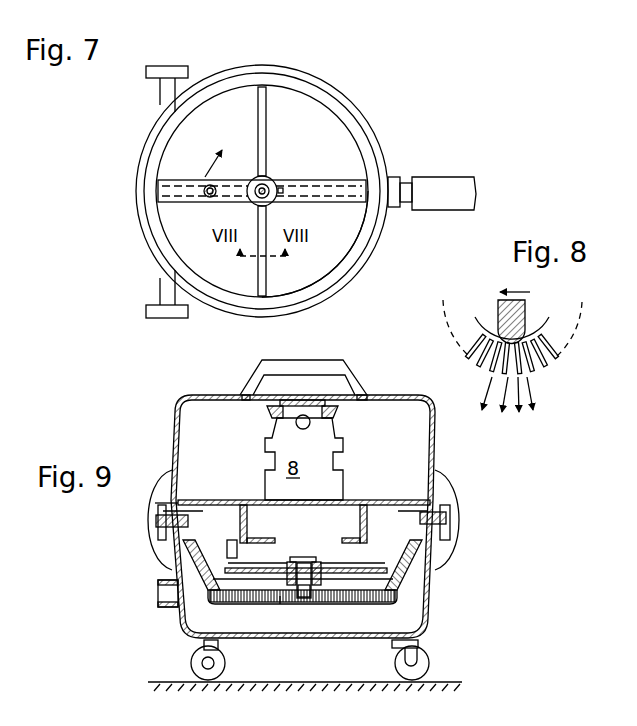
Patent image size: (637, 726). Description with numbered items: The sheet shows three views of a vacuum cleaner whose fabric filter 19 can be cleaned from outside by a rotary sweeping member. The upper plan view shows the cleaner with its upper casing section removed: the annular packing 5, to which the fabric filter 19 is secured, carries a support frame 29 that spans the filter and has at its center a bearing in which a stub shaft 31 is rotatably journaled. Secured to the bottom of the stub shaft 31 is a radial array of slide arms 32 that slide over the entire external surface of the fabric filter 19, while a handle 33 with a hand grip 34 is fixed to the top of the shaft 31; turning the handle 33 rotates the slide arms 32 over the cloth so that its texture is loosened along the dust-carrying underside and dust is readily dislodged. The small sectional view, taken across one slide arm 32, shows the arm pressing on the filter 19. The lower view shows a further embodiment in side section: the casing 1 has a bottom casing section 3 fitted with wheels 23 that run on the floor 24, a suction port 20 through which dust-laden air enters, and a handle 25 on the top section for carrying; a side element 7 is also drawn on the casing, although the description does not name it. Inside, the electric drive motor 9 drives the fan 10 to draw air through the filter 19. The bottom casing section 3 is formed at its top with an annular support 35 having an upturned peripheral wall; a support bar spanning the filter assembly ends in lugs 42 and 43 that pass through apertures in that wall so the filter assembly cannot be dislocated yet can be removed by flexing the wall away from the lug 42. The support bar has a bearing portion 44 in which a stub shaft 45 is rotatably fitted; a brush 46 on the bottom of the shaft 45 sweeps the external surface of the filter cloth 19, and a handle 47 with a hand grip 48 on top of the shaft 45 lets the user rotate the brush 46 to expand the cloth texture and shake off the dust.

In FIG. 9, the casing 1 is at (208, 397).
In FIG. 7, the bottom casing section 3 is at (325, 80).
In FIG. 9, the bottom casing section 3 is at (433, 588).
In FIG. 7, the annular packing 5 is at (247, 68).
In FIG. 9, the bumper 7 is at (160, 500).
In FIG. 9, the electric drive motor 9 is at (322, 505).
In FIG. 9, the fan 10 is at (335, 445).
In FIG. 7, the fabric filter 19 is at (335, 257).
In FIG. 8, the fabric filter 19 is at (557, 340).
In FIG. 9, the fabric filter 19 is at (405, 596).
In FIG. 7, the suction port 20 is at (393, 187).
In FIG. 9, the suction port 20 is at (160, 598).
In FIG. 7, the wheels 23 is at (170, 66).
In FIG. 9, the wheels 23 is at (208, 668).
In FIG. 9, the floor 24 is at (245, 684).
In FIG. 9, the handle 25 is at (343, 368).
In FIG. 7, the support frame 29 is at (340, 178).
In FIG. 9, the support frame 29 is at (228, 573).
In FIG. 7, the stub shaft 31 is at (262, 206).
In FIG. 7, the slide arms 32 is at (266, 143).
In FIG. 8, the slide arms 32 is at (525, 312).
In FIG. 7, the handle 33 is at (222, 202).
In FIG. 7, the hand grip 34 is at (205, 188).
In FIG. 9, the annular support 35 is at (162, 537).
In FIG. 9, the lug 42 is at (158, 521).
In FIG. 9, the lug 43 is at (448, 518).
In FIG. 9, the bearing portion 44 is at (318, 565).
In FIG. 9, the stub shaft 45 is at (304, 562).
In FIG. 9, the brush 46 is at (278, 598).
In FIG. 9, the handle 47 is at (262, 560).
In FIG. 9, the hand grip 48 is at (231, 540).